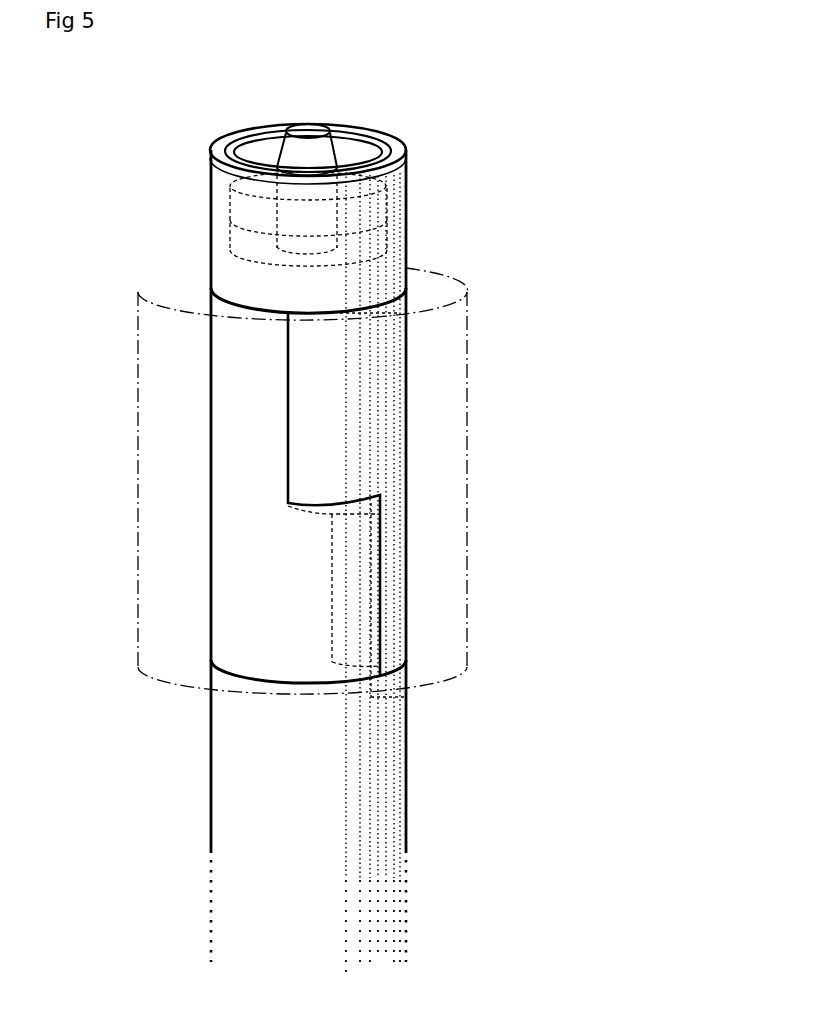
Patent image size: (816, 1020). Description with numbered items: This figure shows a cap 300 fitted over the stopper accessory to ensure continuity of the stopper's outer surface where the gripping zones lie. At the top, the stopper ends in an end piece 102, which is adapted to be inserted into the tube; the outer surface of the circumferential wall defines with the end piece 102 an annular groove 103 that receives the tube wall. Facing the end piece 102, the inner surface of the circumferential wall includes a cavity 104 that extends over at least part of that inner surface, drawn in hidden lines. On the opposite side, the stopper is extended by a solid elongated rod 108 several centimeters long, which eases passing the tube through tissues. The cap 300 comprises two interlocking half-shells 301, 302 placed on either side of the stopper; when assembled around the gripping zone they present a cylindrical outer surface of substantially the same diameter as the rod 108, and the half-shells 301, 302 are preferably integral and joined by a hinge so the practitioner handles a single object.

The end piece 102 is at (323, 153).
The annular groove 103 is at (260, 134).
The cavity 104 is at (230, 223).
The elongated rod 108 is at (393, 780).
The cap 300 is at (440, 362).
The half-shell 301 is at (228, 463).
The half-shell 302 is at (385, 425).